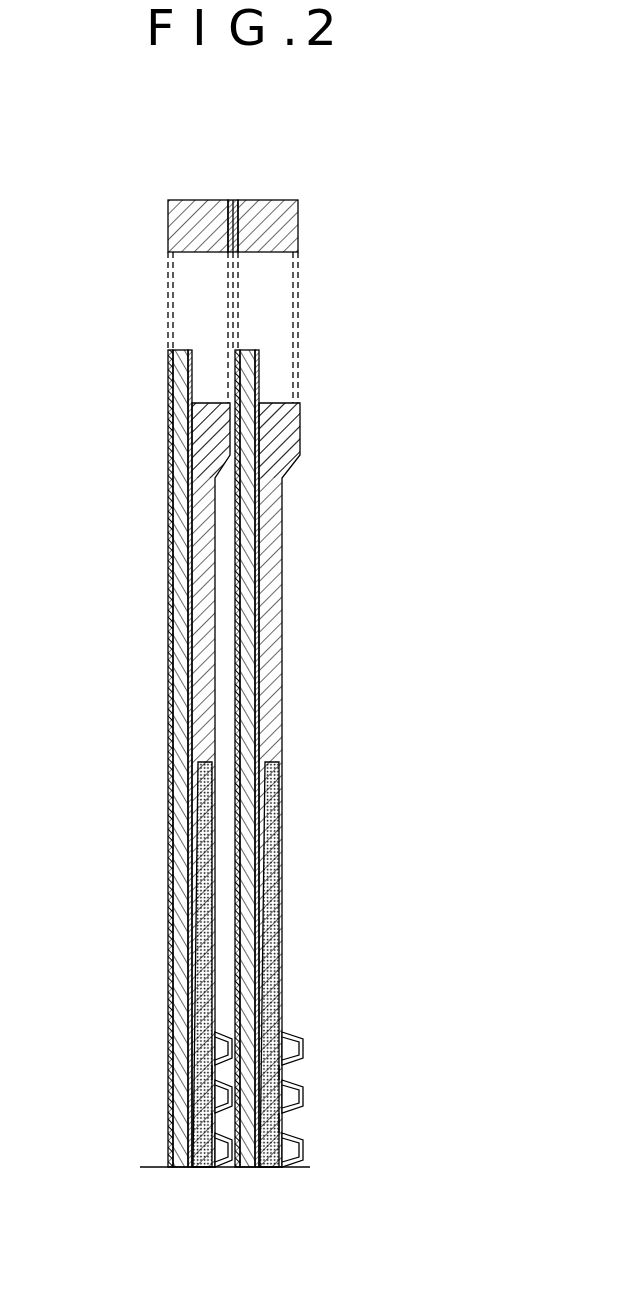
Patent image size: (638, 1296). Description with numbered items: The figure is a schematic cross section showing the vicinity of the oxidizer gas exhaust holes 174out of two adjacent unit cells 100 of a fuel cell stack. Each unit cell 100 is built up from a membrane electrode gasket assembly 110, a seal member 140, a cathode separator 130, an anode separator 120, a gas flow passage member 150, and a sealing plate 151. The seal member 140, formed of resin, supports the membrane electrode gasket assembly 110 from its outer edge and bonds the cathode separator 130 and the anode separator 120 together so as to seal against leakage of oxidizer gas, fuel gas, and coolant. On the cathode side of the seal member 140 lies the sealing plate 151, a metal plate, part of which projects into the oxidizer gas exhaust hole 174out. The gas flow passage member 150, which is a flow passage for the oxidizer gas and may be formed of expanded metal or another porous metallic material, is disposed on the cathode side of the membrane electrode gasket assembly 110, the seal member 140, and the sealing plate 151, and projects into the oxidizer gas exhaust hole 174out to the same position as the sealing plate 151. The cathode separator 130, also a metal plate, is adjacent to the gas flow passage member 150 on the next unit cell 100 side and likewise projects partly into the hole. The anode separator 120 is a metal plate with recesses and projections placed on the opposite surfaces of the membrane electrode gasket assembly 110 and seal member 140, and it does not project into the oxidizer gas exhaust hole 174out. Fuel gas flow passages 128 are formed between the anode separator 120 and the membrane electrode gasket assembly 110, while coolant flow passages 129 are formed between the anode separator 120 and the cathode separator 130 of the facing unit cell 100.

The unit cell 100 is at (230, 197).
The membrane electrode gasket assembly 110 is at (171, 968).
The anode separator 120 is at (186, 713).
The fuel gas flow passage 128 is at (222, 1048).
The coolant flow passage 129 is at (226, 1072).
The cathode separator 130 is at (168, 592).
The seal member 140 is at (185, 462).
The gas flow passage member 150 is at (176, 651).
The sealing plate 151 is at (170, 512).
The oxidizer gas exhaust hole 174out is at (322, 252).